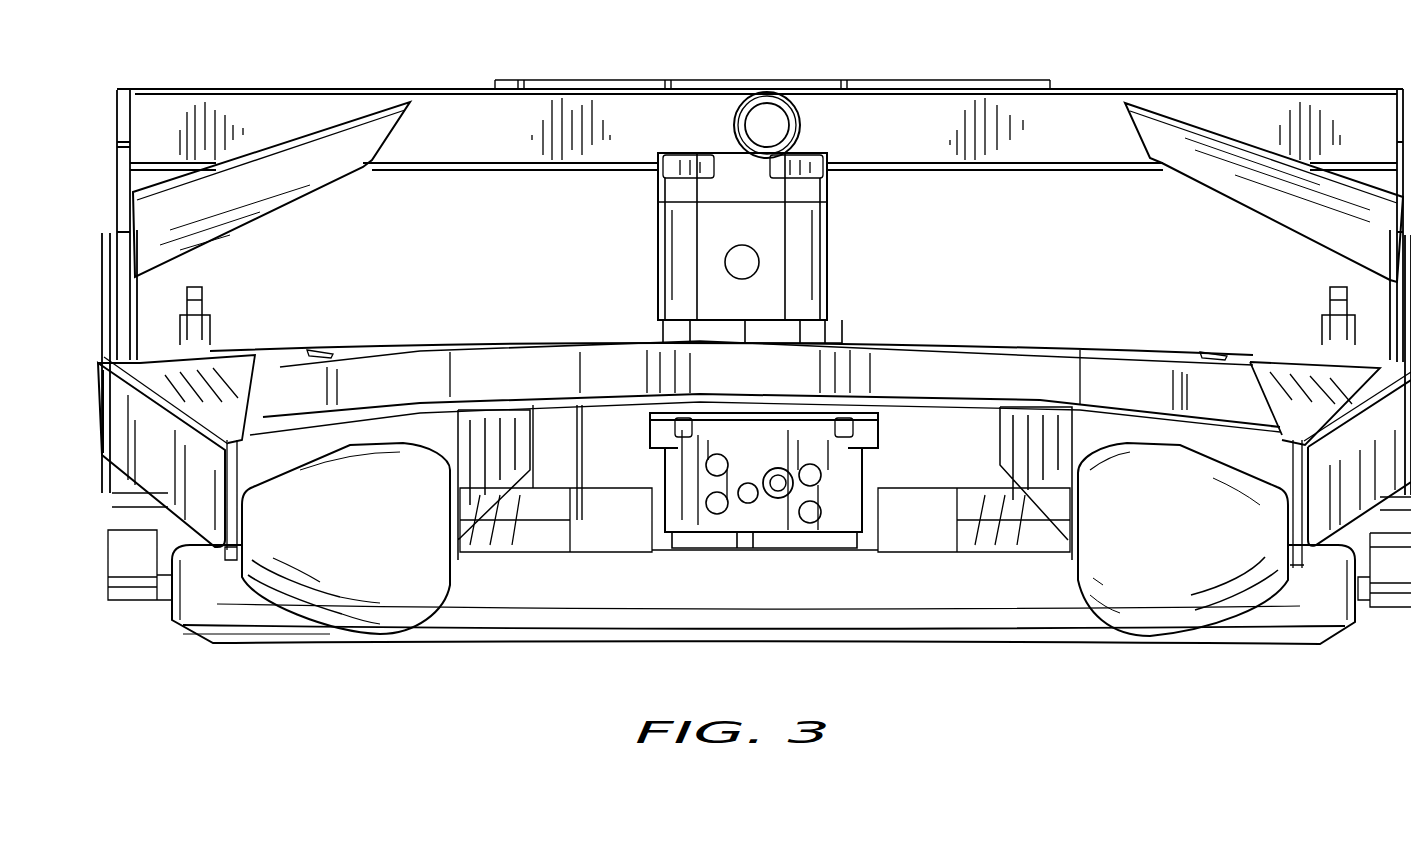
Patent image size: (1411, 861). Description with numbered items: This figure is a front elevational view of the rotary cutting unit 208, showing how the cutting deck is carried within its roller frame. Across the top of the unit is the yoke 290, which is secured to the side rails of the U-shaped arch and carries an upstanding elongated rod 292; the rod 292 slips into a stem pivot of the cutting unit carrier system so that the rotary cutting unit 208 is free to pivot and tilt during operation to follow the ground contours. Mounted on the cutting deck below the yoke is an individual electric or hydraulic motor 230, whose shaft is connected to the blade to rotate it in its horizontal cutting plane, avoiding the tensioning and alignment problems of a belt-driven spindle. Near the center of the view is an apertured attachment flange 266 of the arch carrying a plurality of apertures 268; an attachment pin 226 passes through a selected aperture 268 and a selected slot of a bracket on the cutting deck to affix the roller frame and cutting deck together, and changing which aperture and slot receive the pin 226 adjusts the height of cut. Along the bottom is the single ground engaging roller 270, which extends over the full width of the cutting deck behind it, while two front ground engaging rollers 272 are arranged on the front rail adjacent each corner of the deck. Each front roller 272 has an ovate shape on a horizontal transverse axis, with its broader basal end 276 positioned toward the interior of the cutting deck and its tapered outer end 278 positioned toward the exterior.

The rotary cutting unit 208 is at (633, 60).
The yoke 290 is at (310, 100).
The elongated rod 292 is at (790, 97).
The motor 230 is at (830, 250).
The apertures 268 is at (745, 482).
The attachment flange 266 is at (747, 522).
The attachment pin 226 is at (782, 498).
The rear ground engaging roller 270 is at (935, 647).
The front ground engaging rollers 272 is at (362, 593).
The basal end 276 is at (428, 593).
The tapered outer end 278 is at (257, 563).